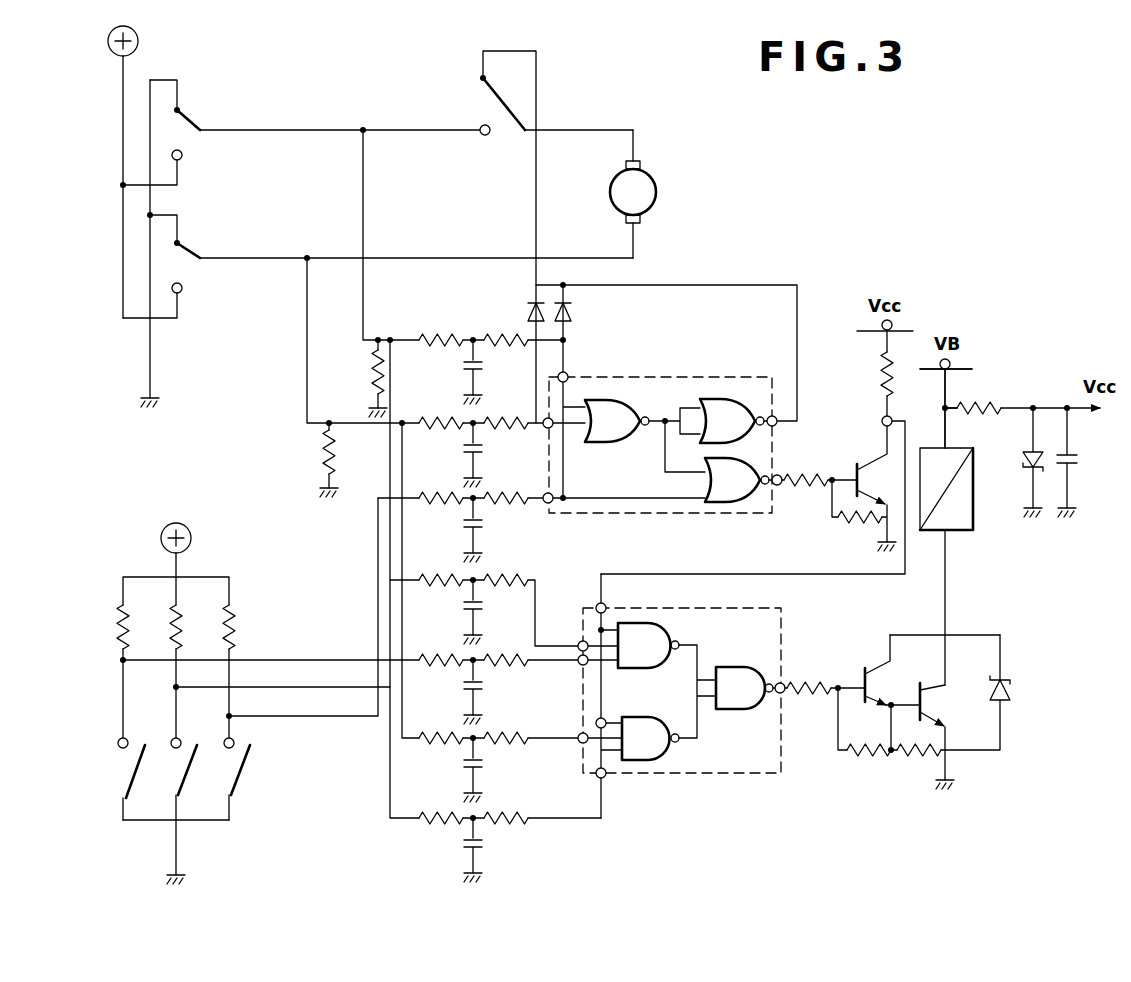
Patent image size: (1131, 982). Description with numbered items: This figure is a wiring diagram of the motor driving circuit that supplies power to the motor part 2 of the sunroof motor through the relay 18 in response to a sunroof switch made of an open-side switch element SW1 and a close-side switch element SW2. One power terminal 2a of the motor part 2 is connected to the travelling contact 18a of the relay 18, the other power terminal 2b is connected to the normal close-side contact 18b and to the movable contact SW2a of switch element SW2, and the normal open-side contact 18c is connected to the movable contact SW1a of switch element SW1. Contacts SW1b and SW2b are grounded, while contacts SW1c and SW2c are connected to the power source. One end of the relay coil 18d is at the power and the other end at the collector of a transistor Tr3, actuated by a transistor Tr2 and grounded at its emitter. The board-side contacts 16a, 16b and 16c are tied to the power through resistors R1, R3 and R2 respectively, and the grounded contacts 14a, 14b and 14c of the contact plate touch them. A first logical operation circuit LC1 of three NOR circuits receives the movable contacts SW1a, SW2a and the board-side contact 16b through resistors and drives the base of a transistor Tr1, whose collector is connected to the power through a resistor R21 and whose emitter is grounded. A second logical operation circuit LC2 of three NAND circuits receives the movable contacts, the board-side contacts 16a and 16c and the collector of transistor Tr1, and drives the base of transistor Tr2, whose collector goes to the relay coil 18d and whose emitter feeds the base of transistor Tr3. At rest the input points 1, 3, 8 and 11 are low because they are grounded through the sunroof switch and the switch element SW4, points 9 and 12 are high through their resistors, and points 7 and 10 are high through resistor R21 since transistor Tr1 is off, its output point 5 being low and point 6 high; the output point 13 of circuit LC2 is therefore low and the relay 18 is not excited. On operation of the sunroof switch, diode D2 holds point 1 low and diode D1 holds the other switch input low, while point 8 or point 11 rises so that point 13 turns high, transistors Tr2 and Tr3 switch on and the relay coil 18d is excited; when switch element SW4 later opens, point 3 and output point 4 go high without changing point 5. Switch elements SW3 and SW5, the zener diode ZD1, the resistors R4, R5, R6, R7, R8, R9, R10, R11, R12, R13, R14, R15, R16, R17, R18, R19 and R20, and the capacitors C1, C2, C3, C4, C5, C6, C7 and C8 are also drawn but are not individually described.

The open-side switch element SW1 is at (168, 139).
The movable contact SW1a is at (190, 124).
The contact SW1b is at (181, 108).
The contact SW1c is at (182, 156).
The close-side switch element SW2 is at (168, 272).
The movable contact SW2a is at (195, 258).
The contact SW2b is at (182, 240).
The contact SW2c is at (181, 293).
The relay 18 is at (483, 105).
The travelling contact 18a is at (497, 104).
The normal close-side contact 18b is at (487, 78).
The normal open-side contact 18c is at (486, 137).
The relay coil 18d is at (962, 522).
The motor part 2 is at (659, 194).
The power terminal 2a is at (641, 165).
The power terminal 2b is at (641, 220).
The input signal point 1 is at (570, 372).
The input signal point 3 is at (547, 506).
The output signal point 4 is at (768, 415).
The output signal point 5 is at (771, 488).
The collector point 6 is at (895, 415).
The input signal point 7 is at (609, 600).
The input signal point 8 is at (580, 640).
The input signal point 9 is at (578, 668).
The input signal point 10 is at (609, 718).
The input signal point 11 is at (578, 746).
The input signal point 12 is at (609, 779).
The output signal point 13 is at (785, 682).
The transistor Tr1 is at (851, 466).
The transistor Tr2 is at (862, 678).
The transistor Tr3 is at (938, 705).
The third switch SW3 is at (118, 773).
The switch element SW4 is at (258, 752).
The fifth switch SW5 is at (174, 758).
The contact 14a is at (143, 775).
The contact 14b is at (241, 772).
The contact 14c is at (236, 794).
The board-side contact 16a is at (117, 745).
The board-side contact 16b is at (231, 740).
The board-side contact 16c is at (172, 740).
The first logical operation circuit LC1 is at (660, 432).
The second logical operation circuit LC2 is at (682, 690).
The diode D1 is at (521, 304).
The diode D2 is at (579, 391).
The zener diode ZD1 is at (1013, 462).
The resistor R1 is at (108, 627).
The resistor R2 is at (161, 627).
The resistor R3 is at (215, 627).
The resistor R4 is at (315, 460).
The resistor R5 is at (365, 378).
The resistor R6 is at (441, 353).
The resistor R7 is at (506, 353).
The resistor R8 is at (441, 436).
The resistor R9 is at (506, 436).
The resistor R10 is at (436, 511).
The resistor R11 is at (506, 511).
The resistor R12 is at (436, 593).
The resistor R13 is at (506, 593).
The resistor R14 is at (436, 673).
The resistor R15 is at (506, 673).
The resistor R16 is at (436, 751).
The resistor R17 is at (506, 751).
The resistor R18 is at (436, 831).
The resistor R19 is at (506, 831).
The resistor R20 is at (984, 398).
The resistor R21 is at (867, 374).
The capacitor C1 is at (484, 372).
The capacitor C2 is at (484, 455).
The capacitor C3 is at (484, 530).
The capacitor C4 is at (484, 612).
The capacitor C5 is at (484, 692).
The capacitor C6 is at (484, 770).
The capacitor C7 is at (484, 850).
The capacitor C8 is at (1084, 462).